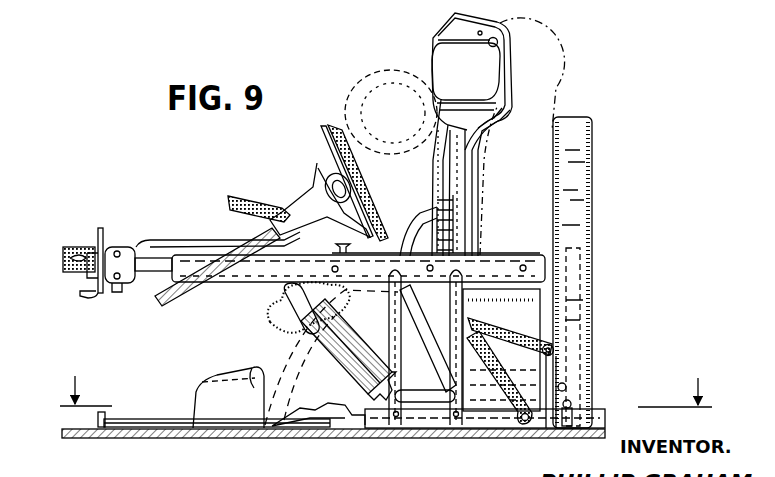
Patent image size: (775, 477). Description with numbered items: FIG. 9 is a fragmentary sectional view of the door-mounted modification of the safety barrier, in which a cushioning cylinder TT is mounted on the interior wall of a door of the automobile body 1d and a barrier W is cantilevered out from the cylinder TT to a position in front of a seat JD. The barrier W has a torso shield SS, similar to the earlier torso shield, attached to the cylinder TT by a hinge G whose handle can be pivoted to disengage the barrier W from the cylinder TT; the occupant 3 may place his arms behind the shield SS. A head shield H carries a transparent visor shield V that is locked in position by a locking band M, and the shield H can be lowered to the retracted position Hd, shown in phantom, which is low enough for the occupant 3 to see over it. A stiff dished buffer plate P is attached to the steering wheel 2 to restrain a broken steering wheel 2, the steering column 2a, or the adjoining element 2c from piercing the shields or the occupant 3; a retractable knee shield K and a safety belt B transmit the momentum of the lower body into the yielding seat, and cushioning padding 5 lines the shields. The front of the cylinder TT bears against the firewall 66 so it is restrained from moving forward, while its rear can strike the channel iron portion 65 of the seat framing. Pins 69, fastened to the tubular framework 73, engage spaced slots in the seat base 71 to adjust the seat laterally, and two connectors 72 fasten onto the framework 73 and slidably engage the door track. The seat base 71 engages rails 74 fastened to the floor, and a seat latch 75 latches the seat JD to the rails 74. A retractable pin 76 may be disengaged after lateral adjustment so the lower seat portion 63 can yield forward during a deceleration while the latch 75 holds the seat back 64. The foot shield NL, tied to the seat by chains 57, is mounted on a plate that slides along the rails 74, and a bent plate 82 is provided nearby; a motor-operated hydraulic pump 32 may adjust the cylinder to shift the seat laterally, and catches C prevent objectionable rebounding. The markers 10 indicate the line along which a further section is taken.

The automobile body 1d is at (84, 439).
The steering wheel 2 is at (321, 133).
The steering column 2a is at (184, 300).
The lever finger 2c is at (236, 201).
The occupant 3 is at (556, 92).
The cushioning padding 5 is at (346, 134).
The section line 10 is at (370, 388).
The motor operated hydraulic pump 32 is at (71, 246).
The chains 57 is at (322, 398).
The lower seat portion 63 is at (383, 353).
The seat back 64 is at (592, 162).
The channel iron portion 65 is at (582, 266).
The firewall 66 is at (104, 238).
The pins 69 is at (385, 430).
The seat base 71 is at (512, 430).
The connectors 72 is at (396, 428).
The tubular framework 73 is at (425, 343).
The rails 74 is at (154, 423).
The seat latch 75 is at (574, 406).
The retractable pin 76 is at (566, 384).
The bent plate 82 is at (313, 428).
The safety belt B is at (492, 356).
The catches C is at (192, 240).
The hinge G is at (410, 228).
The head shield H is at (516, 62).
The retracted position of head shield Hd is at (355, 80).
The seat JD is at (546, 214).
The knee shield K is at (274, 314).
The locking band M is at (438, 40).
The foot shield NL is at (212, 384).
The buffer plate P is at (332, 173).
The torso shield SS is at (428, 173).
The cushioning cylinder TT is at (507, 250).
The visor shield V is at (428, 54).
The barrier W is at (382, 60).